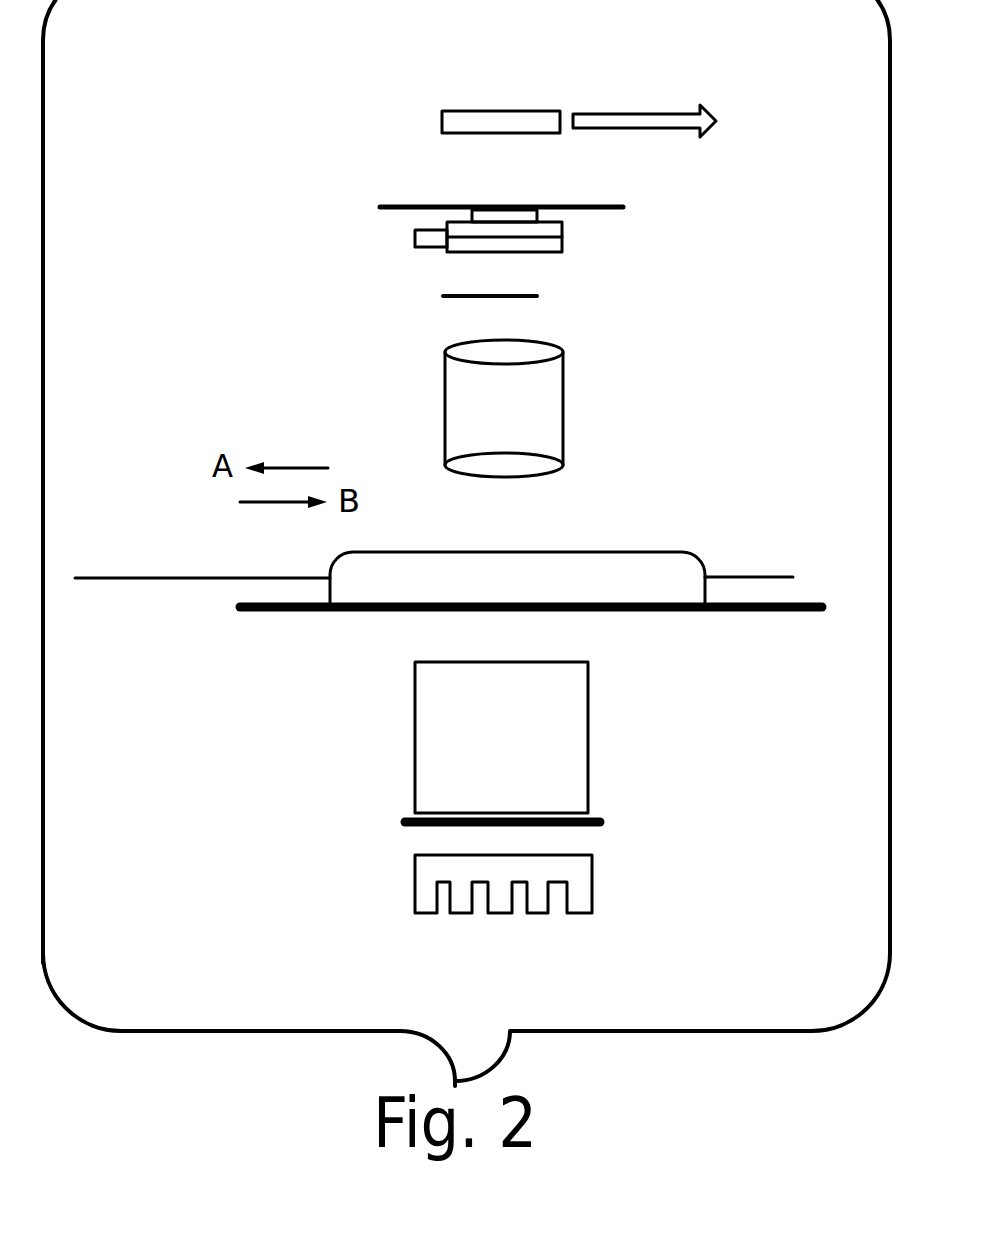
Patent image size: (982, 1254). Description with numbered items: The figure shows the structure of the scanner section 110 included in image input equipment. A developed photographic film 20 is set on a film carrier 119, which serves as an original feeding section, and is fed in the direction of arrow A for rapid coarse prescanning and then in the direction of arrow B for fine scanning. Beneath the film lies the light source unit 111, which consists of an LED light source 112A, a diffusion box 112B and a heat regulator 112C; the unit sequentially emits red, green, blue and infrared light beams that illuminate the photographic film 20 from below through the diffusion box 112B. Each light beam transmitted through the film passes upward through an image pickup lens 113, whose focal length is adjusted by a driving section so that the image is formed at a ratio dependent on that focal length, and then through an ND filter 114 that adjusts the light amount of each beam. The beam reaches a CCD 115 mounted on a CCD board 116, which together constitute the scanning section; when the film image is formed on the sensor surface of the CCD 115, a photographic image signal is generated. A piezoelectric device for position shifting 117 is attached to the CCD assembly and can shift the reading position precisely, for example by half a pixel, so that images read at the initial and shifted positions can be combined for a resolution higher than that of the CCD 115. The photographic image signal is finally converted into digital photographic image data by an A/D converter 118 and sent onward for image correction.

The scanner section 110 is at (748, 287).
The A/D converter 118 is at (522, 111).
The piezoelectric device for position shifting 117 is at (415, 239).
The CCD board 116 is at (585, 206).
The CCD 115 is at (537, 212).
The ND filter 114 is at (446, 296).
The image pickup lens 113 is at (445, 402).
The photographic film 20 is at (252, 557).
The film carrier 119 is at (693, 555).
The light source unit 111 is at (240, 678).
The diffusion box 112B is at (413, 749).
The LED light source 112A is at (405, 822).
The heat regulator 112C is at (415, 896).